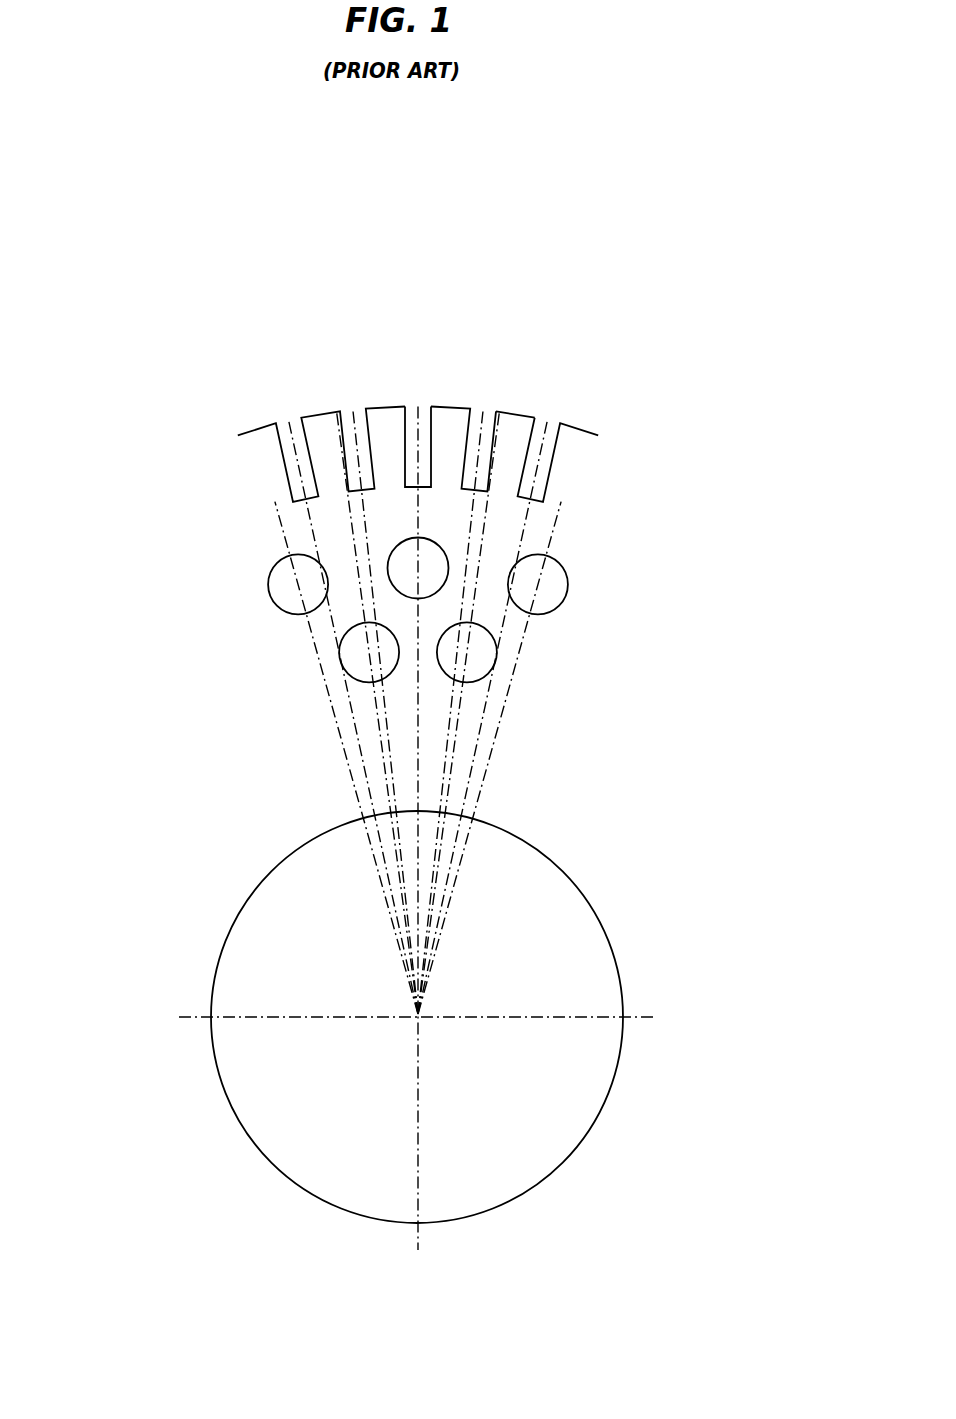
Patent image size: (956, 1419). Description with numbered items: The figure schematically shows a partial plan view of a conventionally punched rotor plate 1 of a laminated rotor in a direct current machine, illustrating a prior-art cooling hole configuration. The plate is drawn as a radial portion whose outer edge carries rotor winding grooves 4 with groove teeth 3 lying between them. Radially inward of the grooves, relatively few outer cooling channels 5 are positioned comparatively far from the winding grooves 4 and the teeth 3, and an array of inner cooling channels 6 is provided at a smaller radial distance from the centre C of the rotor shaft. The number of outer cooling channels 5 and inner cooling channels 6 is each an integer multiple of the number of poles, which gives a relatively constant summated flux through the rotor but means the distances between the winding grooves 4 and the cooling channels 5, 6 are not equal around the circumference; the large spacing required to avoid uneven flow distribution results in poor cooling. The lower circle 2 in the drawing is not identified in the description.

The rotor plate 1 is at (256, 415).
The rotor 2 is at (327, 1126).
The groove tooth 3 is at (519, 413).
The rotor winding groove 4 is at (412, 410).
The outer cooling channel 5 is at (267, 589).
The inner cooling channel 6 is at (358, 679).
The centre of the rotor shaft C is at (422, 1016).